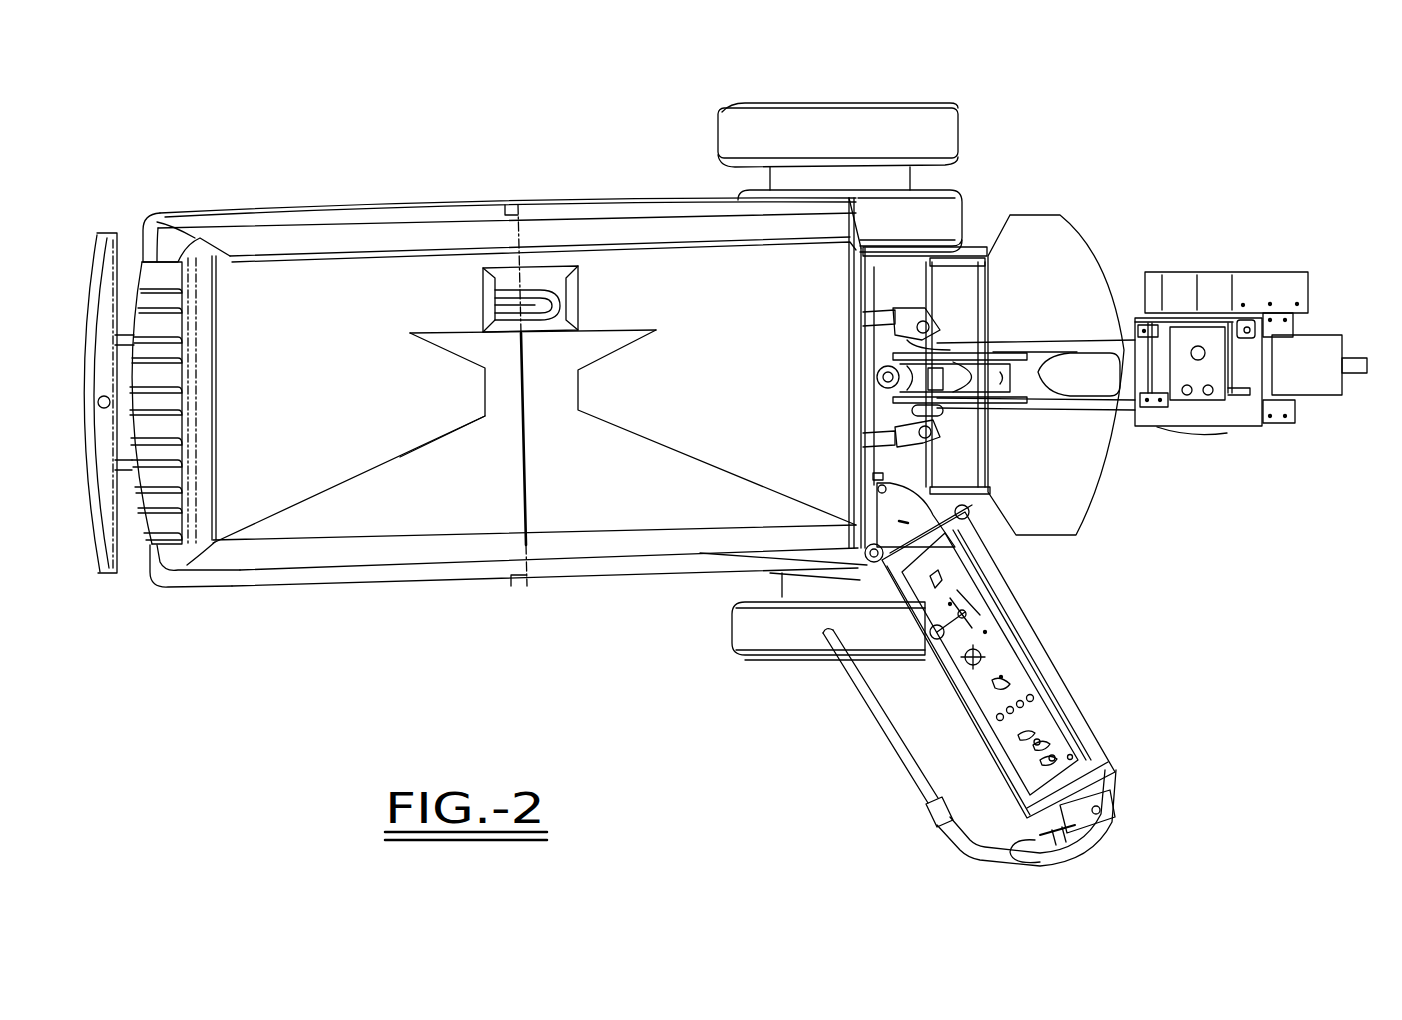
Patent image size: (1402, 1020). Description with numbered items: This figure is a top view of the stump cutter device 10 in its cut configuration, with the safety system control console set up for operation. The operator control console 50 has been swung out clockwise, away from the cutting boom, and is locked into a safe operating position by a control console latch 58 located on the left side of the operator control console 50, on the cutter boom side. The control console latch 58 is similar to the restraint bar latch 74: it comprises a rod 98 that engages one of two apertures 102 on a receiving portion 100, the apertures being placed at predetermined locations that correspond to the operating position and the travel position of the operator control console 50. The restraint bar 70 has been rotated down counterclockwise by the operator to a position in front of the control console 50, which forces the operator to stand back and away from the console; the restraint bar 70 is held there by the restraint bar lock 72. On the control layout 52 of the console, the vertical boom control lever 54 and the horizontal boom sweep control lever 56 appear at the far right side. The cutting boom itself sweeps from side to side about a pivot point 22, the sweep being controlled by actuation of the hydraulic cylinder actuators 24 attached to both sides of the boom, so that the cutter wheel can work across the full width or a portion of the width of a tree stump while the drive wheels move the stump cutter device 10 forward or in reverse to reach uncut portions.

The stump cutter device 10 is at (398, 178).
The pivot point 22 is at (877, 378).
The hydraulic cylinder actuators 24 is at (905, 308).
The operator control console 50 is at (1055, 645).
The control layout 52 is at (990, 632).
The vertical boom control lever 54 is at (1040, 740).
The horizontal boom sweep control lever 56 is at (1052, 758).
The control console latch 58 is at (1088, 428).
The restraint bar 70 is at (878, 733).
The restraint bar lock 72 is at (1033, 848).
The restraint bar latch 74 is at (932, 823).
The rod 98 is at (962, 512).
The receiving portion 100 is at (900, 490).
The apertures 102 is at (878, 492).